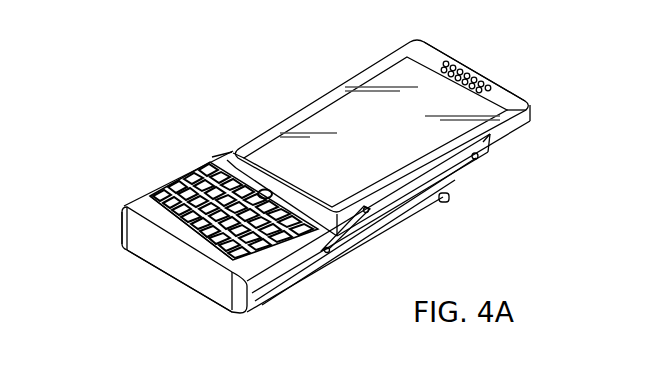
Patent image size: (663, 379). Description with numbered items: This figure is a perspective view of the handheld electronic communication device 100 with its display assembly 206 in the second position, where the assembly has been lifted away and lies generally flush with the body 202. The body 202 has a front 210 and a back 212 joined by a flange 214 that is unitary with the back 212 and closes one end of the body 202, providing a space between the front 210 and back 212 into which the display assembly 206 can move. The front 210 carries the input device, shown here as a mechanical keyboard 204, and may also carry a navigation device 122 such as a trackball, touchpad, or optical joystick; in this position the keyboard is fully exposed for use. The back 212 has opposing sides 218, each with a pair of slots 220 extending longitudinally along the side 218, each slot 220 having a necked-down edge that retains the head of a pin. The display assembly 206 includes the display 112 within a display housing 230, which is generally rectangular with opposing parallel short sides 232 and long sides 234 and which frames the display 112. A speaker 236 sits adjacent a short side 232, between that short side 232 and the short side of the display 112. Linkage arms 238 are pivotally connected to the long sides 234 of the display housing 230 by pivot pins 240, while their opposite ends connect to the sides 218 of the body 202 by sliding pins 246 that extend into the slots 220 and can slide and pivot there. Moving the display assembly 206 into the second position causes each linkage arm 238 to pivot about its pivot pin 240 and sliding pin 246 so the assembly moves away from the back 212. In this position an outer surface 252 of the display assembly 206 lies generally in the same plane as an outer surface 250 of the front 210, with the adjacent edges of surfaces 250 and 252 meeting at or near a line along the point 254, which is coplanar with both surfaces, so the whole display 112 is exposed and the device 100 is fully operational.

The handheld electronic communication device 100 is at (247, 344).
The display 112 is at (348, 100).
The navigation device 122 is at (193, 220).
The body 202 is at (121, 207).
The keyboard 204 is at (195, 183).
The display assembly 206 is at (412, 38).
The front 210 is at (153, 190).
The back 212 is at (449, 197).
The flange 214 is at (188, 268).
The side 218 is at (252, 297).
The slot 220 is at (420, 203).
The display housing 230 is at (508, 100).
The short side 232 is at (482, 65).
The long side 234 is at (485, 140).
The speaker 236 is at (461, 72).
The linkage arm 238 is at (345, 232).
The pivot pin 240 is at (367, 212).
The sliding pin 246 is at (328, 253).
The outer surface of the front 250 is at (212, 157).
The outer surface of the display assembly 252 is at (233, 153).
The point 254 is at (227, 160).